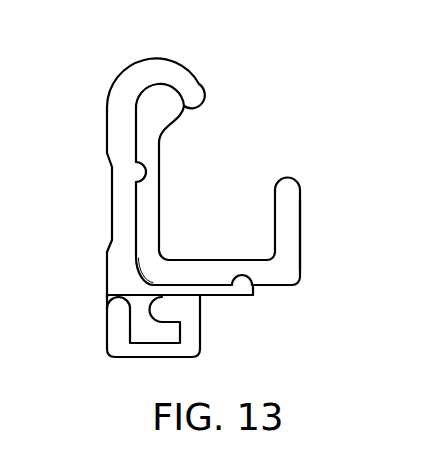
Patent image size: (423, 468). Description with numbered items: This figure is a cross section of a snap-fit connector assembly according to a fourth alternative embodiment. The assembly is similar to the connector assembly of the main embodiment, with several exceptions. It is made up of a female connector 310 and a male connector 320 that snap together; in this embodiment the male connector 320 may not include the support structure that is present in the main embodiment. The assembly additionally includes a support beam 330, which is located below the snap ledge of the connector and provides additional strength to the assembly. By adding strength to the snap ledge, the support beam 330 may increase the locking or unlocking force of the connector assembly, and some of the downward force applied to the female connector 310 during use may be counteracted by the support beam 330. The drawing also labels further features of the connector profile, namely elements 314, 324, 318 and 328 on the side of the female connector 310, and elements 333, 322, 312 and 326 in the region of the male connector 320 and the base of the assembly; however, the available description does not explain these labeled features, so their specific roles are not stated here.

The female connector 310 is at (123, 76).
The curled hook portion 314 is at (151, 62).
The hook tip lobe 324 is at (176, 90).
The inner wall of slot 318 is at (135, 143).
The retention bump 328 is at (135, 180).
The male connector 320 is at (301, 203).
The outer surface of upright arm 333 is at (301, 252).
The locating bump 322 is at (233, 277).
The base flange end 312 is at (245, 293).
The base bottom surface 326 is at (272, 287).
The support beam 330 is at (112, 330).